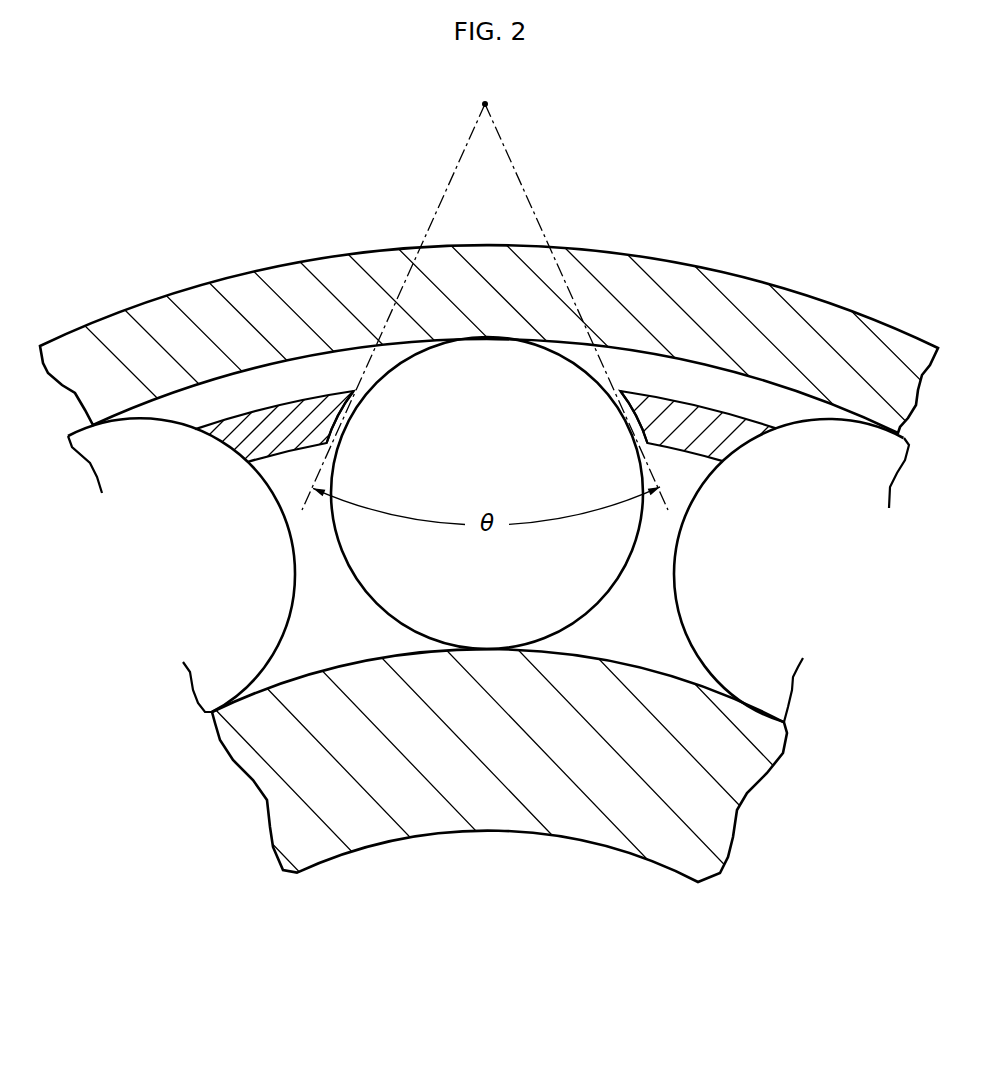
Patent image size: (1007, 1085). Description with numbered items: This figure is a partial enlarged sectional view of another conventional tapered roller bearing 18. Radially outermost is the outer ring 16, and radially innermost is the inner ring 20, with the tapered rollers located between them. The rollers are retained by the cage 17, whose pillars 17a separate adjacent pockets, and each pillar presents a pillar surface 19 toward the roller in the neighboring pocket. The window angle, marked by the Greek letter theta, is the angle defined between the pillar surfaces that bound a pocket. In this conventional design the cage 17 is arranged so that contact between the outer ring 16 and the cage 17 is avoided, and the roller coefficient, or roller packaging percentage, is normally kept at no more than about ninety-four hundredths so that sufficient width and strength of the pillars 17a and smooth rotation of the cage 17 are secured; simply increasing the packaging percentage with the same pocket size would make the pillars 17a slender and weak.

The outer ring 16 is at (753, 300).
The cage 17 is at (273, 402).
The pillars 17a is at (318, 408).
The tapered roller bearing 18 is at (550, 367).
The pillar surface 19 is at (625, 417).
The inner ring 20 is at (507, 813).